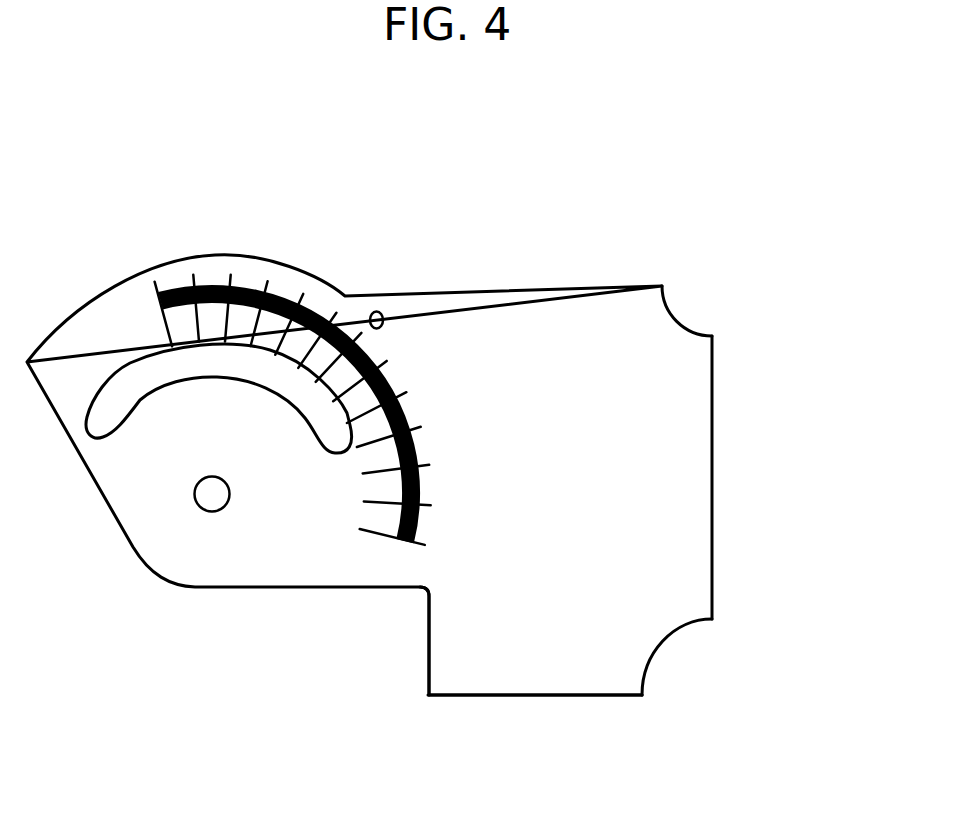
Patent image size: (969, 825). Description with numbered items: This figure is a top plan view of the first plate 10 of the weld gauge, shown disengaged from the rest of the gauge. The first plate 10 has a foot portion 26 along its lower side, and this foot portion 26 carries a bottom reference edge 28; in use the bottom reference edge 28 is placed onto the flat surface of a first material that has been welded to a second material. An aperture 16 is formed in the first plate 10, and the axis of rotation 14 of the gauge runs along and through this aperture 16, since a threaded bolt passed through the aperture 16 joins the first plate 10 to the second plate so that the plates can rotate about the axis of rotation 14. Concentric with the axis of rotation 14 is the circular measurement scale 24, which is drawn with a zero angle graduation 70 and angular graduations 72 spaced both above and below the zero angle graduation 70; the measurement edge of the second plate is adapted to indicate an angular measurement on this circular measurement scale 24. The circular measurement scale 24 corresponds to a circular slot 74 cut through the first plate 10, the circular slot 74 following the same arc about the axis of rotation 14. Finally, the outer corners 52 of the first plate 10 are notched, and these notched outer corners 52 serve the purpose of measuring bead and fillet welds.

The first plate 10 is at (627, 445).
The axis of rotation 14 is at (208, 498).
The aperture 16 is at (227, 507).
The circular measurement scale 24 is at (352, 323).
The foot portion 26 is at (494, 667).
The bottom reference edge 28 is at (540, 695).
The outer corners 52 is at (683, 313).
The zero angle graduation 70 is at (388, 305).
The angular graduations 72 is at (282, 300).
The circular slot 74 is at (182, 365).